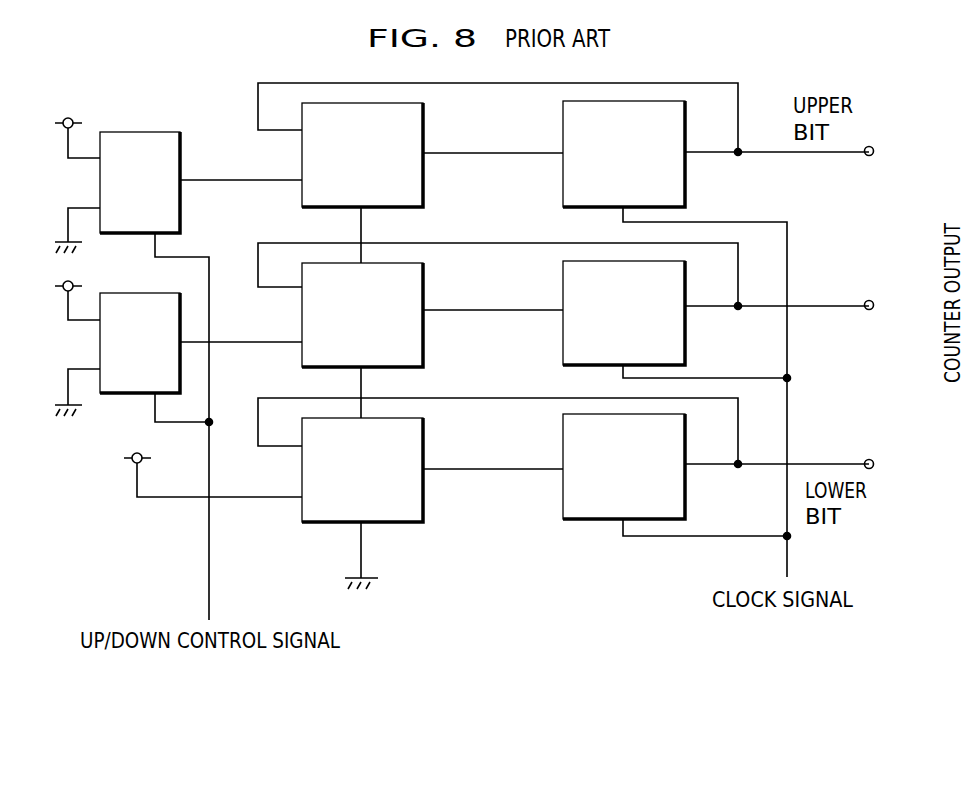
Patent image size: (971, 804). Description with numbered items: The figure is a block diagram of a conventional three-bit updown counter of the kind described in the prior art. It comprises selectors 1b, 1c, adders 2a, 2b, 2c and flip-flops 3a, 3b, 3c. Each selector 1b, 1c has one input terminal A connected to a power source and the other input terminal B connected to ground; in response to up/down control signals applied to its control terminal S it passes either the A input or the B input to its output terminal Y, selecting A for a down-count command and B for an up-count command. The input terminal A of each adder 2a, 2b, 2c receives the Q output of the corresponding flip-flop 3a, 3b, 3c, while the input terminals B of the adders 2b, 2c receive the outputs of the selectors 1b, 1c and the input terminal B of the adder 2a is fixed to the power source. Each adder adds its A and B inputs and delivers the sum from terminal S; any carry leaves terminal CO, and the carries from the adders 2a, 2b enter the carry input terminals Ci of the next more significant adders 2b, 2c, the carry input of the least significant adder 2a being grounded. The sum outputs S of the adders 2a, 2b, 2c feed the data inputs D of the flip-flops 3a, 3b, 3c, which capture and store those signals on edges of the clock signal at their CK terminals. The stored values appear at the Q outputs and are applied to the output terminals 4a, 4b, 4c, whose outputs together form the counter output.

The selector 1c is at (148, 140).
The selector 1b is at (128, 385).
The adder 2c is at (414, 181).
The adder 2b is at (415, 345).
The adder 2a is at (415, 497).
The flip-flop 3c is at (677, 180).
The flip-flop 3b is at (677, 338).
The flip-flop 3a is at (677, 493).
The output terminal 4c is at (873, 147).
The output terminal 4b is at (873, 301).
The output terminal 4a is at (873, 460).